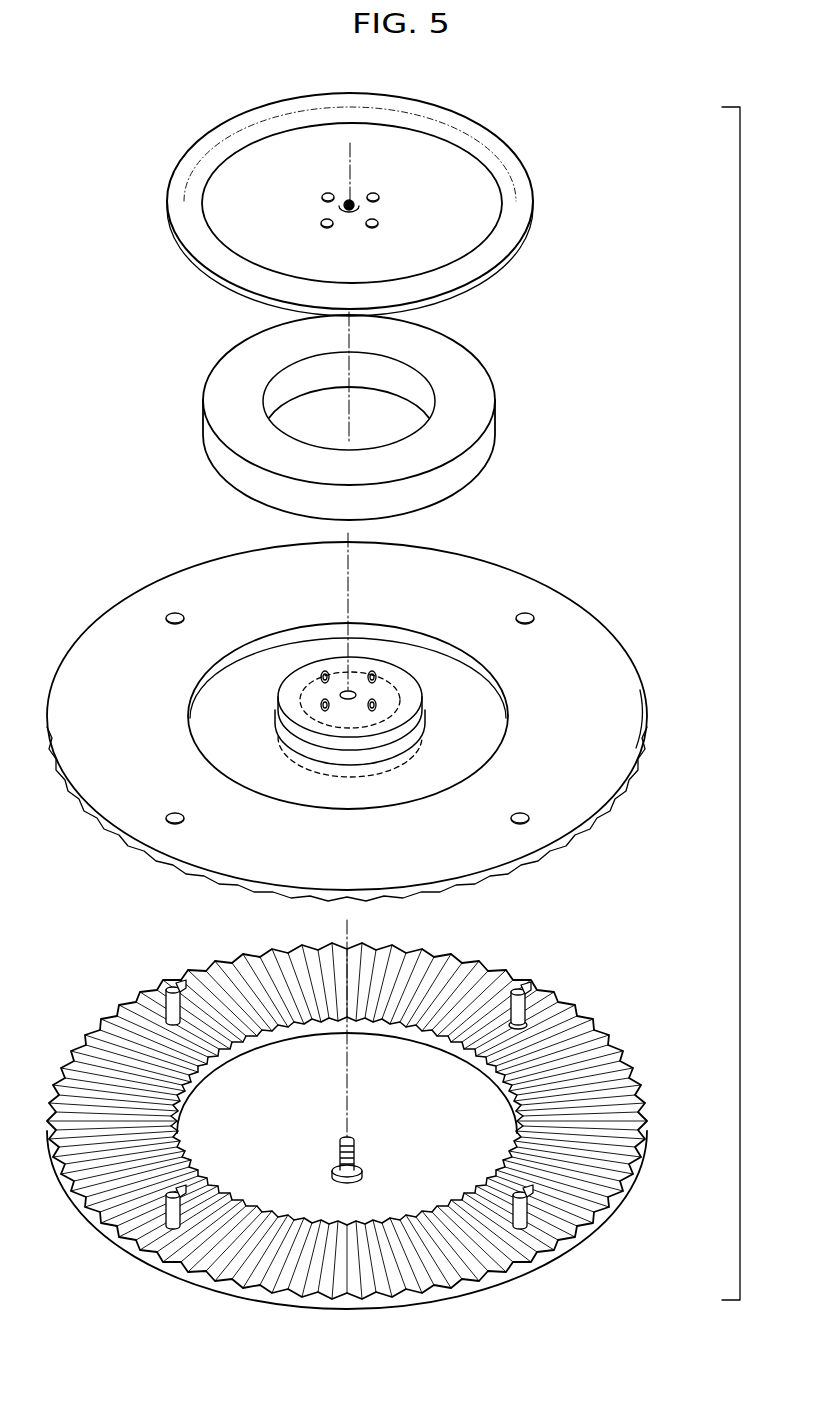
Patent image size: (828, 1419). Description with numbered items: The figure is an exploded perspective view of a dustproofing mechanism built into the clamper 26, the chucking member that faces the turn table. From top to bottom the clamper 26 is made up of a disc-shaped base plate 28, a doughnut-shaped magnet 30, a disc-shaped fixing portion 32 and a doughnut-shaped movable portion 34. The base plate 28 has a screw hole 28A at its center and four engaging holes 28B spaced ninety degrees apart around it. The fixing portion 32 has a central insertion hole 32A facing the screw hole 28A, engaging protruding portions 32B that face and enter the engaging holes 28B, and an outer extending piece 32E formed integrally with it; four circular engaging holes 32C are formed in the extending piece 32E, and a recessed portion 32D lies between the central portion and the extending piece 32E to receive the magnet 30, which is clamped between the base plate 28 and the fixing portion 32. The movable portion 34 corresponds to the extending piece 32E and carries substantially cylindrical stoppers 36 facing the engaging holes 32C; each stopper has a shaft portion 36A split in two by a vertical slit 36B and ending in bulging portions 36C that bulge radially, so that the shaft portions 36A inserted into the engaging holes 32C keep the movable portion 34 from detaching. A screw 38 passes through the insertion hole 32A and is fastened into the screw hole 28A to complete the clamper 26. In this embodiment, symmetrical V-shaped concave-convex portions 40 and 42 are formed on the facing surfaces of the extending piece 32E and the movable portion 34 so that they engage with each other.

The clamper 26 is at (585, 553).
The base plate 28 is at (526, 172).
The screw hole 28A is at (352, 200).
The engaging holes 28B is at (385, 199).
The magnet 30 is at (482, 394).
The fixing portion 32 is at (650, 657).
The insertion hole 32A is at (358, 696).
The engaging protruding portions 32B is at (372, 672).
The engaging holes 32C is at (184, 615).
The recessed portion 32D is at (447, 650).
The extending piece 32E is at (634, 730).
The movable portion 34 is at (615, 1218).
The stoppers 36 is at (159, 995).
The shaft portions 36A is at (480, 1038).
The slit 36B is at (528, 1018).
The bulging portions 36C is at (530, 983).
The screw 38 is at (362, 1172).
The concave-convex portion 40 is at (546, 860).
The concave-convex portion 42 is at (625, 1052).